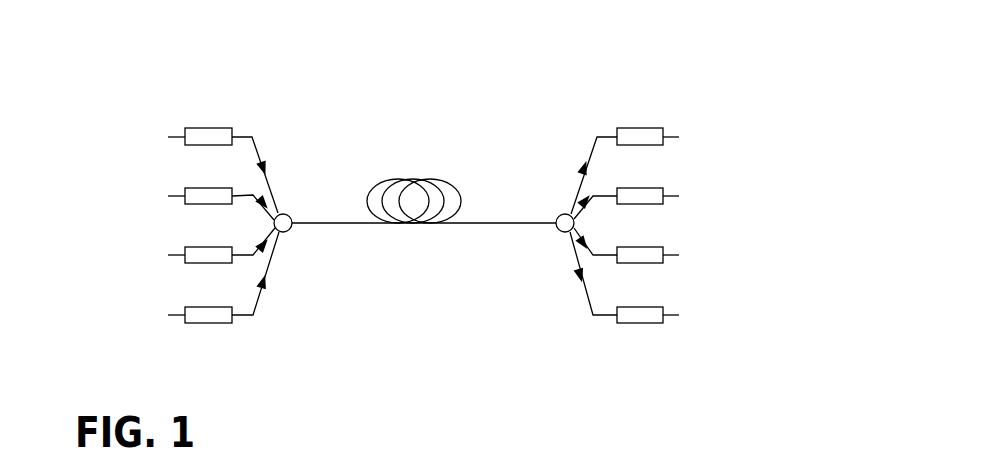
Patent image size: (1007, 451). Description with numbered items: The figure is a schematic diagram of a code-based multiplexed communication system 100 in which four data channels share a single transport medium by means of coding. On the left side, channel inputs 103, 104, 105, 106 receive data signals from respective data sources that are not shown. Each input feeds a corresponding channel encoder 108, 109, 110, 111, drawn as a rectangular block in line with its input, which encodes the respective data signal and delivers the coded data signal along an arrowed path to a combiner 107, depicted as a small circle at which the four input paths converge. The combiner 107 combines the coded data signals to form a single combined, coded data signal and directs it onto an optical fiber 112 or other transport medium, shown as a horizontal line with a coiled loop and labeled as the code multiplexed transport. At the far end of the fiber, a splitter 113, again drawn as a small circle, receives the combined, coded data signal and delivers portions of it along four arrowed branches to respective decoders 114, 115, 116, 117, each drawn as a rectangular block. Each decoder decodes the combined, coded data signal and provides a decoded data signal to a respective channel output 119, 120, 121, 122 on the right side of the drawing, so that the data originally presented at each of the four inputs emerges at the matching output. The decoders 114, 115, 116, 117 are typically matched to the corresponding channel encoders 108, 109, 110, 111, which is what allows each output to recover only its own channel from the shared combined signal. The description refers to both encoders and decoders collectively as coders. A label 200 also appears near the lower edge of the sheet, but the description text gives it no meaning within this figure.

The code-based multiplexed communication system 100 is at (843, 45).
The channel input 103 is at (173, 132).
The channel input 104 is at (173, 191).
The channel input 105 is at (173, 251).
The channel input 106 is at (173, 311).
The combiner 107 is at (287, 214).
The channel encoder 108 is at (219, 130).
The channel encoder 109 is at (217, 191).
The channel encoder 110 is at (261, 295).
The channel encoder 111 is at (204, 323).
The optical fiber 112 is at (493, 223).
The splitter 113 is at (562, 214).
The decoder 114 is at (628, 131).
The decoder 115 is at (589, 162).
The decoder 116 is at (627, 258).
The decoder 117 is at (627, 323).
The channel output 119 is at (677, 134).
The channel output 120 is at (677, 193).
The channel output 121 is at (677, 253).
The channel output 122 is at (677, 313).
The system of FIG. 2 (partial label) 200 is at (824, 442).